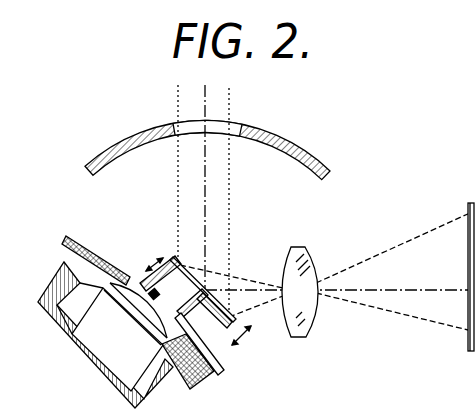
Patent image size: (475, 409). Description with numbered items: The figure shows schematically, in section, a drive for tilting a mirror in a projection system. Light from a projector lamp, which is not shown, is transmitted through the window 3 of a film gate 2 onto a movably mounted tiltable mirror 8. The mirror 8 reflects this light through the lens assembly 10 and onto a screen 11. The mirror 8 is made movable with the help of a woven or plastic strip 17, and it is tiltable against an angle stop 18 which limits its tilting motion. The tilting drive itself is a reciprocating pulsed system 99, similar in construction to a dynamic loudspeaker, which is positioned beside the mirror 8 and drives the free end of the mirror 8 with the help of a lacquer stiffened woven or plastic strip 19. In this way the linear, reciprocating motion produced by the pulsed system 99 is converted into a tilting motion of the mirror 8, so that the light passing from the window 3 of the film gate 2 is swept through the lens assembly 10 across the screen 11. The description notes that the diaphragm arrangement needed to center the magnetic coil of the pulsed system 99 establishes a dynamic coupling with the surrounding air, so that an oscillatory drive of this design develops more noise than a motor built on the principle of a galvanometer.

The film gate 2 is at (150, 128).
The window 3 is at (190, 121).
The tiltable mirror 8 is at (196, 262).
The lens assembly 10 is at (309, 259).
The screen 11 is at (467, 327).
The woven or plastic strip 17 is at (232, 333).
The angle stop 18 is at (212, 374).
The lacquer stiffened woven or plastic strip 19 is at (148, 284).
The reciprocating pulsed system 99 is at (133, 325).